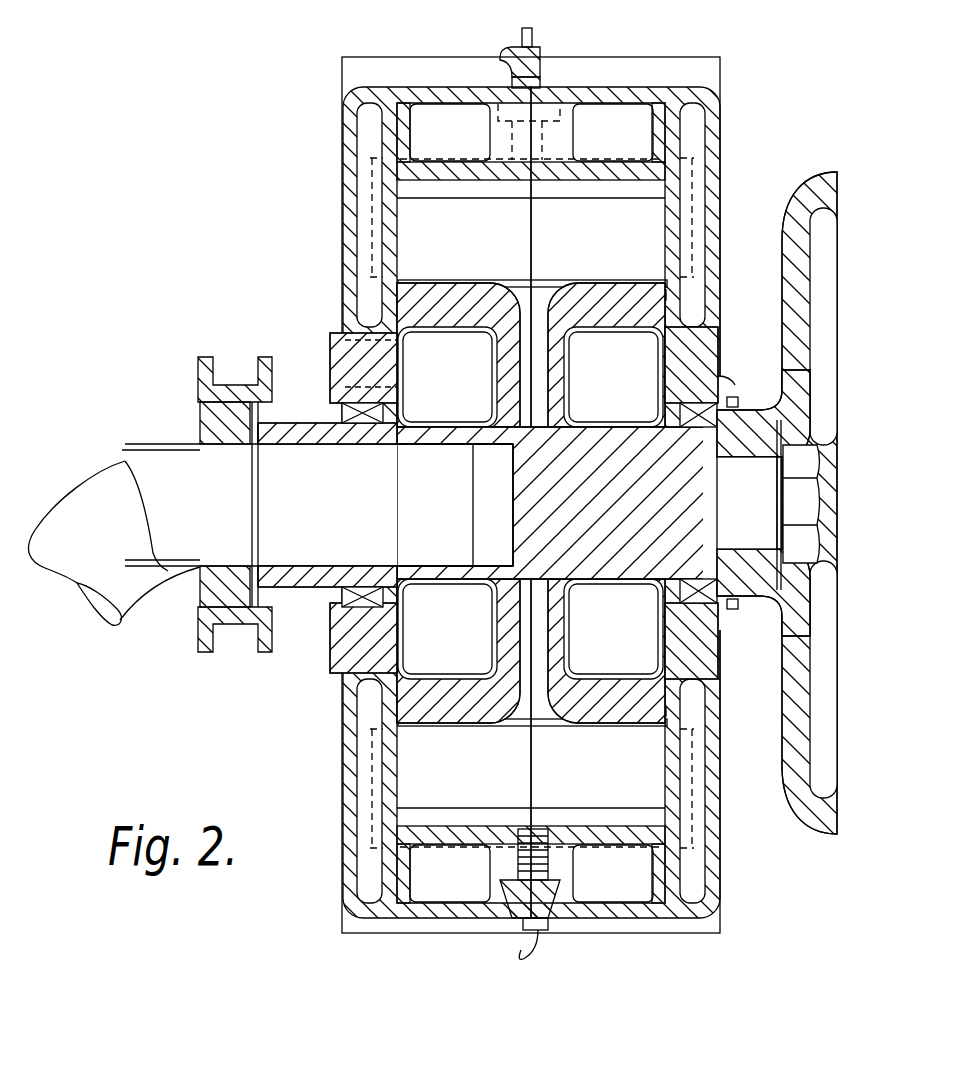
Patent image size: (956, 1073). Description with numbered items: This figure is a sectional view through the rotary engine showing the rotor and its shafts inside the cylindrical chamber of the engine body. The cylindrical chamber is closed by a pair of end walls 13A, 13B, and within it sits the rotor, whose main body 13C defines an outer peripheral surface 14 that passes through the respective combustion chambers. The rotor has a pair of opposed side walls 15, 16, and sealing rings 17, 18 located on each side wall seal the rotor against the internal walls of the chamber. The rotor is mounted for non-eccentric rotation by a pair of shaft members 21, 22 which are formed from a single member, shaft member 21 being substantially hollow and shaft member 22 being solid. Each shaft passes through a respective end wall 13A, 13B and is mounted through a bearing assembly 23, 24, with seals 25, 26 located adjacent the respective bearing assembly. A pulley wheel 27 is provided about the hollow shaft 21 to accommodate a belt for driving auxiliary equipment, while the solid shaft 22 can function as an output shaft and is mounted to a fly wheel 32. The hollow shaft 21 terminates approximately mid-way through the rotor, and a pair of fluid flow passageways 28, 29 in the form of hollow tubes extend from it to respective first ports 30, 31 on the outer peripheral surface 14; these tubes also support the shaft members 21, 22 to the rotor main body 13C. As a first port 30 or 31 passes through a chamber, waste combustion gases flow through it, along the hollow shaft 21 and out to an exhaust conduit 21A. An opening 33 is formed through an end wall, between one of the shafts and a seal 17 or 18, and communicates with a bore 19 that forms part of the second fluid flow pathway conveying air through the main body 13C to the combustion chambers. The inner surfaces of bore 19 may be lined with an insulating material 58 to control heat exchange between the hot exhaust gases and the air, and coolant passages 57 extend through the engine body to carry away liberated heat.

The end wall 13A is at (343, 140).
The end wall 13B is at (722, 112).
The main body 13C is at (432, 283).
The outer peripheral surface 14 is at (630, 283).
The side wall 15 is at (400, 320).
The side wall 16 is at (672, 312).
The sealing ring 17 is at (392, 276).
The sealing ring 18 is at (670, 292).
The bore 19 is at (364, 360).
The hollow shaft member 21 is at (346, 564).
The exhaust conduit 21A is at (125, 445).
The solid shaft member 22 is at (682, 497).
The bearing assembly 23 is at (360, 436).
The bearing assembly 24 is at (692, 438).
The seal 25 is at (258, 438).
The seal 26 is at (745, 405).
The pulley wheel 27 is at (200, 372).
The fluid flow passageway 28 is at (530, 302).
The fluid flow passageway 29 is at (530, 657).
The first port 30 is at (562, 283).
The first port 31 is at (563, 723).
The fly wheel 32 is at (824, 250).
The opening 33 is at (358, 369).
The coolant passage 57 is at (675, 110).
The insulating material 58 is at (492, 372).